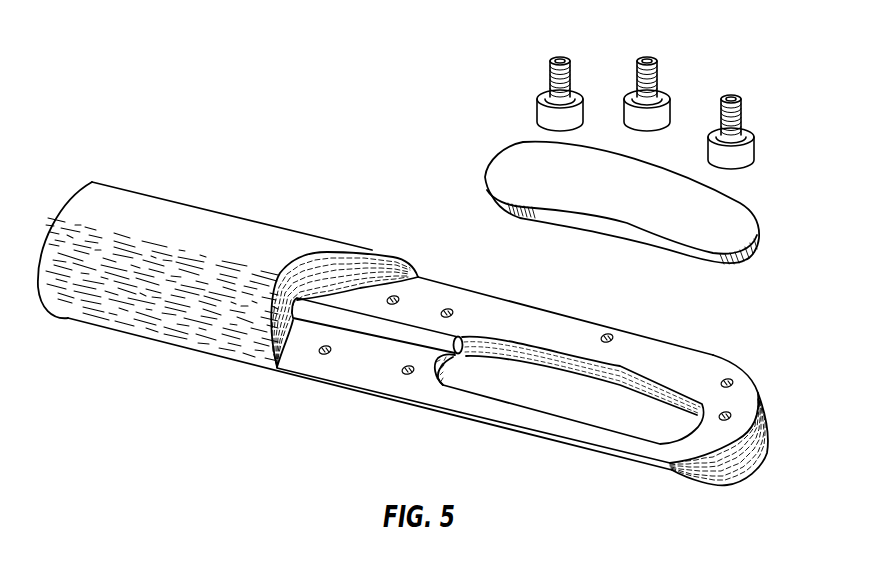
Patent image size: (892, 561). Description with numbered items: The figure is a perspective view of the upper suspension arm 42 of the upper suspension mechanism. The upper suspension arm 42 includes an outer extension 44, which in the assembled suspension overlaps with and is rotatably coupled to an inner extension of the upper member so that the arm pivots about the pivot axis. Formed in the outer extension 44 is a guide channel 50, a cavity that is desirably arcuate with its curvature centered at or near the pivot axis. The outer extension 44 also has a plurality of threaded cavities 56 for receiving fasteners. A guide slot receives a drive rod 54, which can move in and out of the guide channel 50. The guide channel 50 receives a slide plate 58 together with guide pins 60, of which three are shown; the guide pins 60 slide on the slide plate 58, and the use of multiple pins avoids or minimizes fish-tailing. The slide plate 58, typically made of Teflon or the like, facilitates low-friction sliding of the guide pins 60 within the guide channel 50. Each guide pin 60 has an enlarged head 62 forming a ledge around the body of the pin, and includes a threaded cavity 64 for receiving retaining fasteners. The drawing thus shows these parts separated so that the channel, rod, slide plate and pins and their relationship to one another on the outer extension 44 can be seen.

The upper suspension arm 42 is at (140, 164).
The outer extension 44 is at (667, 338).
The guide channel 50 is at (660, 418).
The drive rod 54 is at (383, 338).
The threaded cavities 56 is at (400, 297).
The slide plate 58 is at (507, 146).
The guide pins 60 is at (639, 58).
The enlarged head 62 is at (540, 92).
The threaded cavity 64 is at (729, 97).